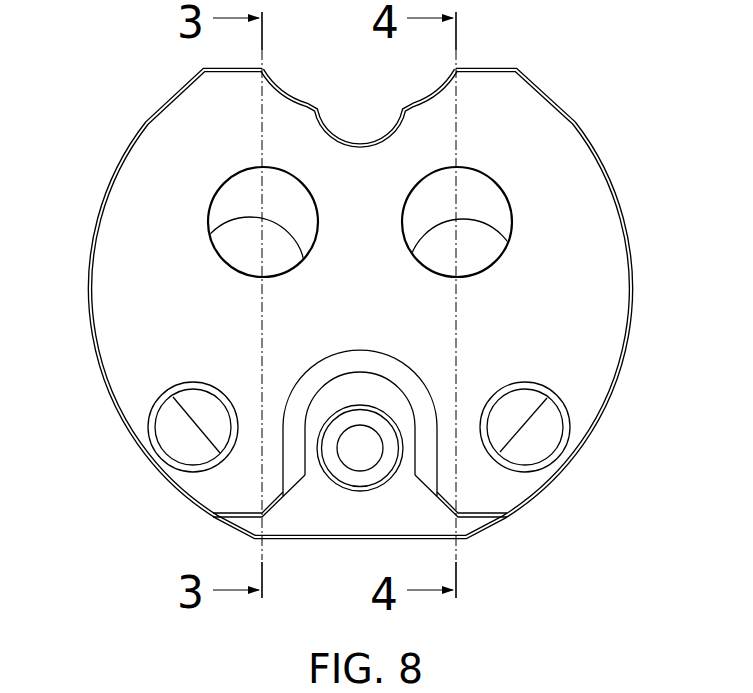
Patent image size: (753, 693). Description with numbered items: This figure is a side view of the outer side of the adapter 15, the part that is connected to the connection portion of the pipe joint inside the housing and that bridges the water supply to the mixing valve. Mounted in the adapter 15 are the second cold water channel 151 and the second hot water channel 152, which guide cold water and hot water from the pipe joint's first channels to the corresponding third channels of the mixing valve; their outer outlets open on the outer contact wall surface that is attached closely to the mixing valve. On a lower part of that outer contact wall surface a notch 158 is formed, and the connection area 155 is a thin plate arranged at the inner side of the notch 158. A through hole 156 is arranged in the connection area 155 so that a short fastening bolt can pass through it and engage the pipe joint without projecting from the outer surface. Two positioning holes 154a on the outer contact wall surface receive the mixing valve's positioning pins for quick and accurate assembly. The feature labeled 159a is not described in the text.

The adapter 15 is at (570, 90).
The second cold water channel 151 is at (240, 197).
The second hot water channel 152 is at (478, 196).
The positioning holes 154a is at (183, 447).
The connection area 155 is at (408, 503).
The through hole 156 is at (360, 453).
The notch 158 is at (313, 470).
The notch 159a is at (355, 120).